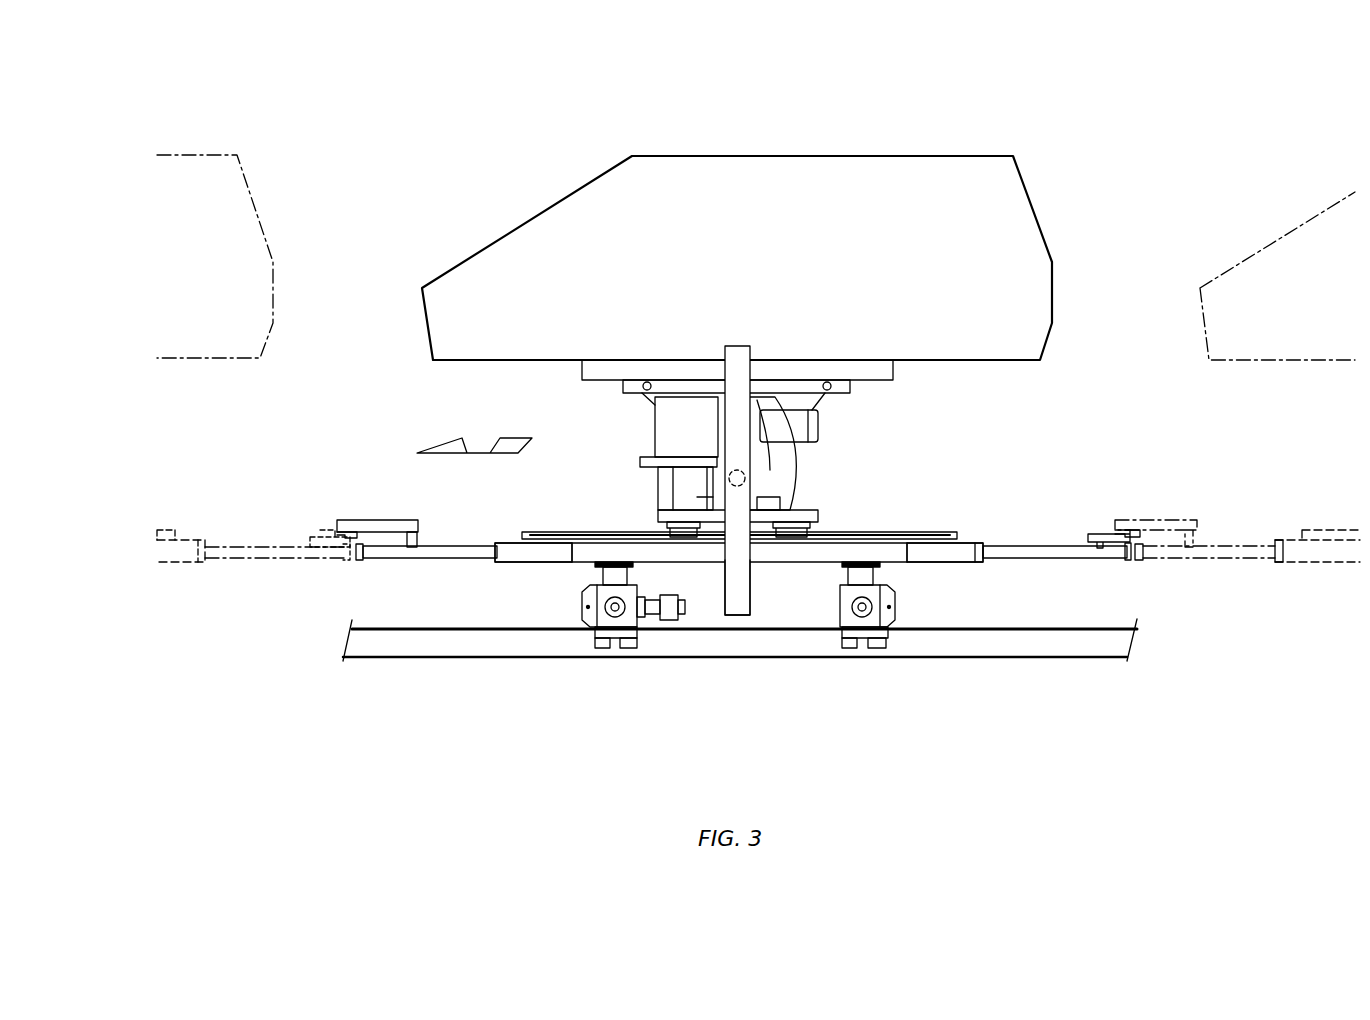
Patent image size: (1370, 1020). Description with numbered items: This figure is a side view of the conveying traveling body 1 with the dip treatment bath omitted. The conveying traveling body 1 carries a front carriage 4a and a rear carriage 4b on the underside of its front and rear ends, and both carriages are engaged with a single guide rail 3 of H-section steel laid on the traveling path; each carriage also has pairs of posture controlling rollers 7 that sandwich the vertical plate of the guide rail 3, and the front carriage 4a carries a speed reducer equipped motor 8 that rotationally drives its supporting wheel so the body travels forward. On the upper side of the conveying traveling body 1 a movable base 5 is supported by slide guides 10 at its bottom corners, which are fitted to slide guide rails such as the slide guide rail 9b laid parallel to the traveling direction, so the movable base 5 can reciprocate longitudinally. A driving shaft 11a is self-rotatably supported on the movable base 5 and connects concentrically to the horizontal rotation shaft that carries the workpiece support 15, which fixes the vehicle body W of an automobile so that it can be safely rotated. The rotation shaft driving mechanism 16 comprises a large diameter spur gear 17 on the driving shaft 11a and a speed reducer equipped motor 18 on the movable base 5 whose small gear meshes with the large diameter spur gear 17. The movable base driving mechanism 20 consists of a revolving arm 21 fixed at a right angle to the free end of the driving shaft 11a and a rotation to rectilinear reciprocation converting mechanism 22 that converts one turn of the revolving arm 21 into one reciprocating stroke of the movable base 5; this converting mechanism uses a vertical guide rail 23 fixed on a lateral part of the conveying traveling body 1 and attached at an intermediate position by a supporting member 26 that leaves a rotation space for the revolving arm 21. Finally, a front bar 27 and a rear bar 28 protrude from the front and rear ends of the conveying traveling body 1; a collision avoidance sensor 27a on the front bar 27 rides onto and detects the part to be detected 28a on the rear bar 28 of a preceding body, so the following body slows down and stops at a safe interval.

The vehicle body W is at (207, 172).
The conveying traveling body 1 is at (503, 541).
The guide rail 3 is at (455, 655).
The front carriage 4a is at (578, 608).
The rear carriage 4b is at (898, 607).
The movable base 5 is at (808, 515).
The posture controlling rollers 7 is at (628, 648).
The speed reducer equipped motor 8 is at (670, 612).
The slide guide rail 9b is at (893, 533).
The slide guides 10 is at (782, 533).
The driving shaft 11a is at (729, 481).
The workpiece support 15 is at (635, 358).
The rotation shaft driving mechanism 16 is at (695, 380).
The large diameter spur gear 17 is at (787, 463).
The speed reducer equipped motor 18 is at (808, 428).
The movable base driving mechanism 20 is at (737, 340).
The revolving arm 21 is at (760, 418).
The rotation to rectilinear reciprocation converting mechanism 22 is at (715, 428).
The guide rail 23 is at (737, 603).
The supporting member 26 is at (580, 550).
The front bar 27 is at (424, 556).
The collision avoidance sensor 27a is at (350, 520).
The rear bar 28 is at (260, 554).
The part to be detected 28a is at (330, 540).